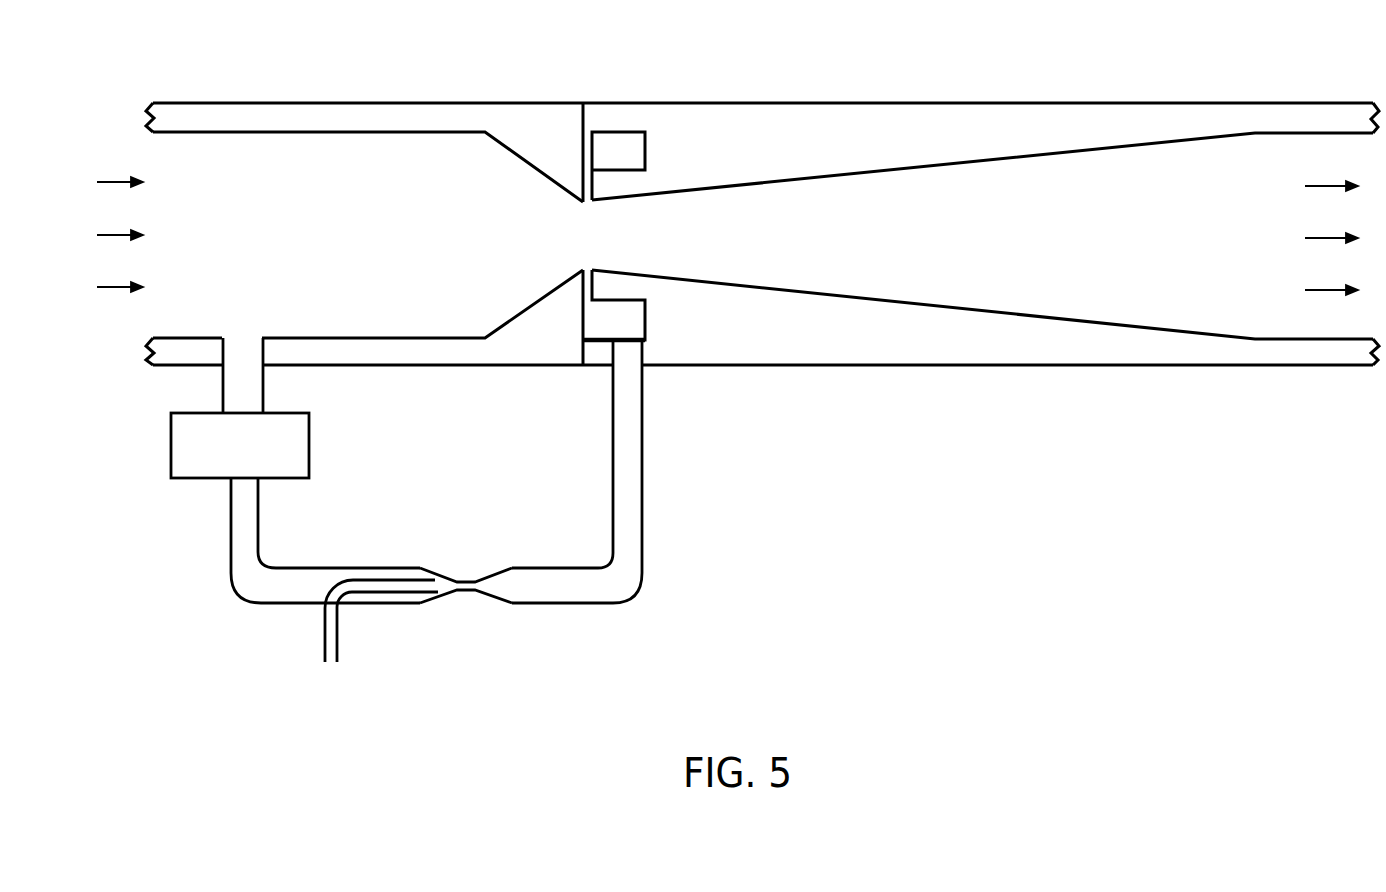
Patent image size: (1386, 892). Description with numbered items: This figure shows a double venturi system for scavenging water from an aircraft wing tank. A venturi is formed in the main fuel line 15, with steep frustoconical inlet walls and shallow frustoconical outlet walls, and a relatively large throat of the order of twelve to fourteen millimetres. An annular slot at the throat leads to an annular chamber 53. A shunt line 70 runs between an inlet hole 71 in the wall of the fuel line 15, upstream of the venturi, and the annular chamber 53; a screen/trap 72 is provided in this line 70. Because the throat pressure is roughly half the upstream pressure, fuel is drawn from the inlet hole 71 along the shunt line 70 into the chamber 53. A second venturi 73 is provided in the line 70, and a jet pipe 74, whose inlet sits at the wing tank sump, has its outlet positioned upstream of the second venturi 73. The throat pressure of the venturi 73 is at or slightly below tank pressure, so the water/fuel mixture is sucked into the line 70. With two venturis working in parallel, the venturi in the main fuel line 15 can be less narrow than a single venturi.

The fuel line 15 is at (315, 103).
The annular chamber 53 is at (645, 330).
The shunt line 70 is at (642, 545).
The inlet hole 71 is at (243, 340).
The screen/trap 72 is at (192, 480).
The second venturi 73 is at (470, 598).
The jet pipe 74 is at (320, 632).